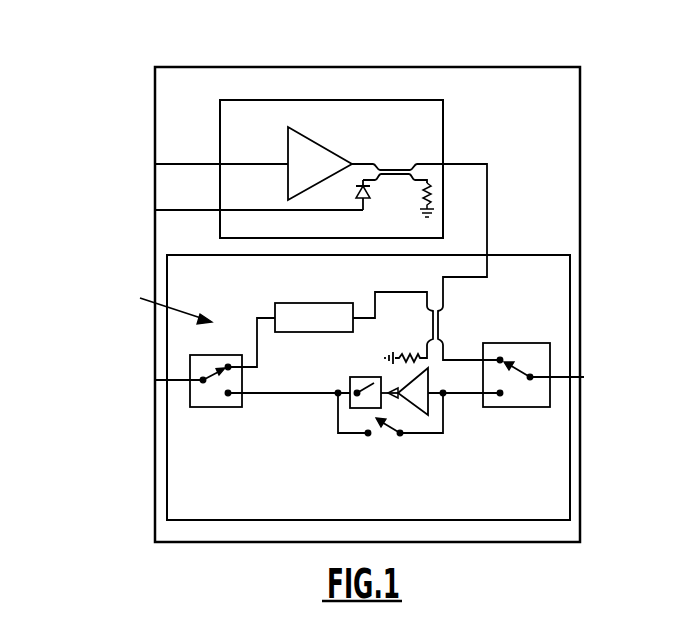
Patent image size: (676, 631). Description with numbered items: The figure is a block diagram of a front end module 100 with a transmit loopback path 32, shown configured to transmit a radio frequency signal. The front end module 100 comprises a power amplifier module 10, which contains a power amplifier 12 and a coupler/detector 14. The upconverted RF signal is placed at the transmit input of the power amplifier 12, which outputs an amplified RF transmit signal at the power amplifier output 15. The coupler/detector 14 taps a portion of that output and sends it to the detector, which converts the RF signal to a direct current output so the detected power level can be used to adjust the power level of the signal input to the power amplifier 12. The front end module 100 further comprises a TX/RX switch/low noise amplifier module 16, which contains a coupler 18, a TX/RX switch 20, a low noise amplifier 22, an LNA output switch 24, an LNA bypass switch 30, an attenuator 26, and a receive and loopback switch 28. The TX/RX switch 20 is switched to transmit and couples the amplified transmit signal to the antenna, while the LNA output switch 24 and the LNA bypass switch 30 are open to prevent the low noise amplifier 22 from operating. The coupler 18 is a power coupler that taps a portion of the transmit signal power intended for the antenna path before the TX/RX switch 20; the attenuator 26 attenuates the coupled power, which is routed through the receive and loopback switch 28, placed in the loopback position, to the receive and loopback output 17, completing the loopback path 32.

The front end module 100 is at (170, 67).
The power amplifier module 10 is at (443, 122).
The power amplifier 12 is at (288, 147).
The coupler/detector 14 is at (396, 181).
The power amplifier output 15 is at (487, 181).
The TX/RX switch/low noise amplifier module 16 is at (512, 255).
The receive & loopback output 17 is at (178, 381).
The coupler 18 is at (438, 328).
The TX/RX switch 20 is at (517, 343).
The low noise amplifier 22 is at (415, 405).
The LNA output switch 24 is at (355, 377).
The attenuator 26 is at (275, 310).
The receive & loopback switch 28 is at (218, 407).
The LNA bypass switch 30 is at (353, 434).
The transmit loopback path 32 is at (162, 305).